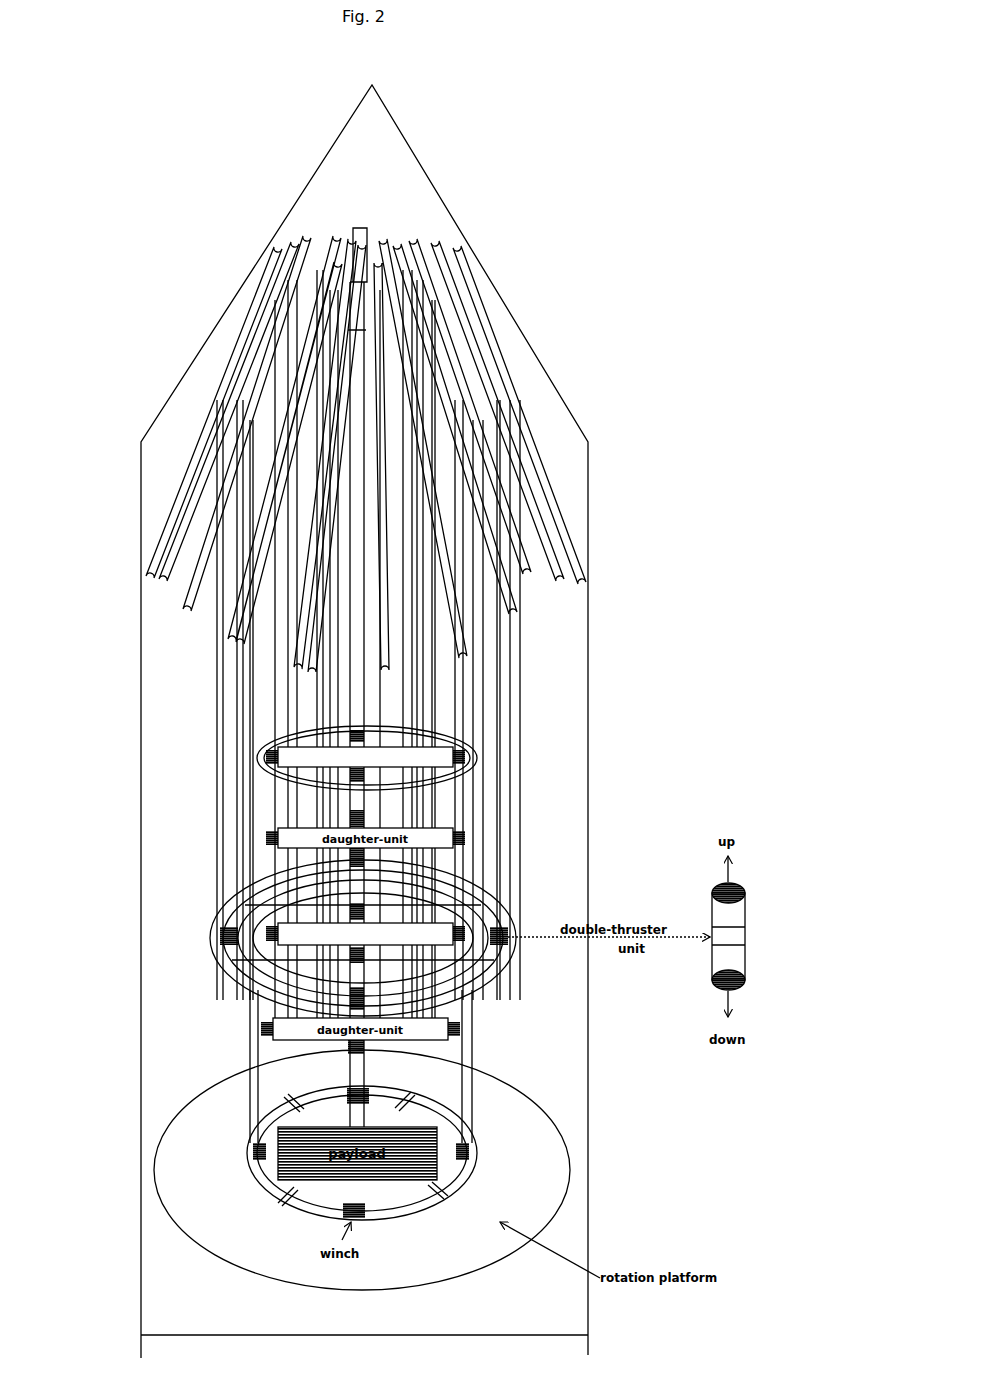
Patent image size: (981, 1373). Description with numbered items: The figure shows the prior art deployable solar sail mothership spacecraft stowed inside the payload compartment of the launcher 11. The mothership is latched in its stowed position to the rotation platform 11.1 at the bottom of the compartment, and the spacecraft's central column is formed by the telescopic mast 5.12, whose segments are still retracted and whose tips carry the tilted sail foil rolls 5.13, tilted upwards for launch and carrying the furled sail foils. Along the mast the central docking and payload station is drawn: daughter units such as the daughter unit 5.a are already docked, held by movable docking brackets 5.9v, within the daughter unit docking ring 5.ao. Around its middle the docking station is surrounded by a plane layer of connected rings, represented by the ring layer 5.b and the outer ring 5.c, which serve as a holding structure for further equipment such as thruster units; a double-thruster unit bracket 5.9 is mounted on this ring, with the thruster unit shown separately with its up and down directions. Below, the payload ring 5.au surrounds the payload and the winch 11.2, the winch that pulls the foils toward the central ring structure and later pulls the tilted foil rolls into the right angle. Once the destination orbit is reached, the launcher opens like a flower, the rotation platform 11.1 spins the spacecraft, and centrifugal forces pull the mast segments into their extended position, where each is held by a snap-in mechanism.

The launcher 11 is at (563, 277).
The tilted sail foil rolls 5.13 is at (365, 224).
The telescopic mast 5.12 is at (210, 672).
The daughter unit docking ring 5.ao is at (443, 776).
The movable docking brackets 5.9v is at (264, 855).
The connected ring layer 5.b is at (500, 914).
The outer ring 5.c is at (492, 982).
The daughter unit 5.a is at (237, 952).
The double-thruster unit bracket 5.9 is at (362, 944).
The payload ring 5.au is at (442, 1107).
The rotation platform 11.1 is at (192, 1193).
The winch 11.2 is at (446, 1193).